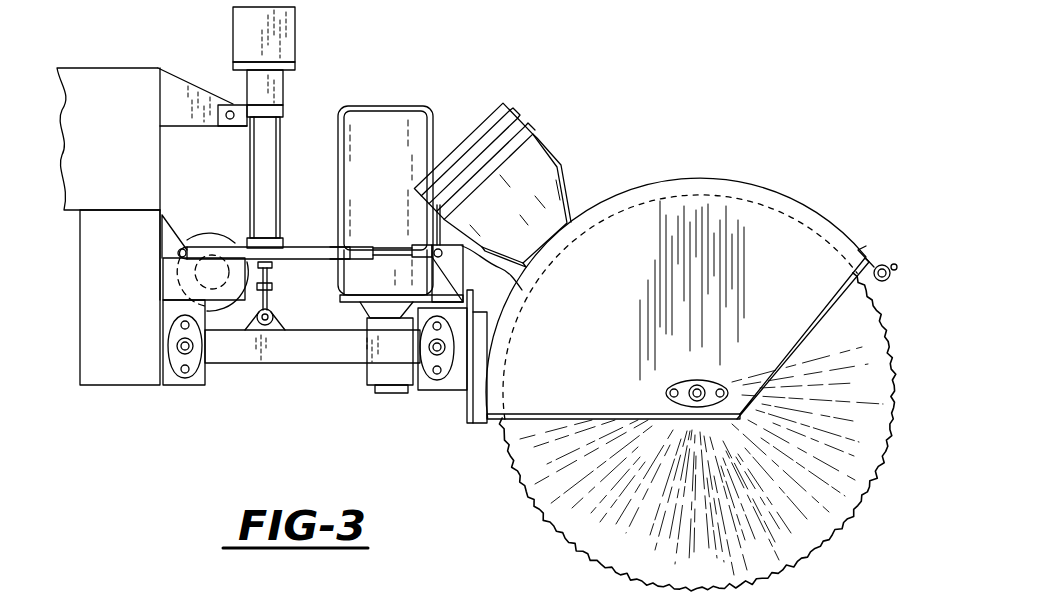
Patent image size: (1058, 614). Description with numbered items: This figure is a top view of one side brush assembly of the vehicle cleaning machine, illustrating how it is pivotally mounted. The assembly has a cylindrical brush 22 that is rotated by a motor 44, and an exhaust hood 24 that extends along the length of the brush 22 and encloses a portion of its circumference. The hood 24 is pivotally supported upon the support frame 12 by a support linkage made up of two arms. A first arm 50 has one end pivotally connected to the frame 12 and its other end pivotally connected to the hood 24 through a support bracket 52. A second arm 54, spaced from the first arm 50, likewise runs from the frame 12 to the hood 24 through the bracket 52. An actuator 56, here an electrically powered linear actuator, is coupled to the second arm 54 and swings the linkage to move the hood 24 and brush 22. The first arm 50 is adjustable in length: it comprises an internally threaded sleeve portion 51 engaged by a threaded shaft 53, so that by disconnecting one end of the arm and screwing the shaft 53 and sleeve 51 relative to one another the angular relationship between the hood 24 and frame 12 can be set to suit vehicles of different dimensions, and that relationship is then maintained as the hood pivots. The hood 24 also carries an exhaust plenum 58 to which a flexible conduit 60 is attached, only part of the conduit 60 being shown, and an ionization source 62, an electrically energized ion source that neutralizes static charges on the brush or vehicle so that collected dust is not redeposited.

The support frame 12 is at (122, 368).
The cylindrical brush 22 is at (840, 504).
The exhaust hood 24 is at (813, 223).
The motor 44 is at (441, 117).
The first arm 50 is at (320, 245).
The internally threaded sleeve portion 51 is at (355, 250).
The support bracket 52 is at (470, 270).
The threaded shaft 53 is at (390, 253).
The second arm 54 is at (295, 357).
The actuator 56 is at (248, 183).
The exhaust plenum 58 is at (547, 163).
The flexible conduit 60 is at (517, 117).
The ionization source 62 is at (893, 283).